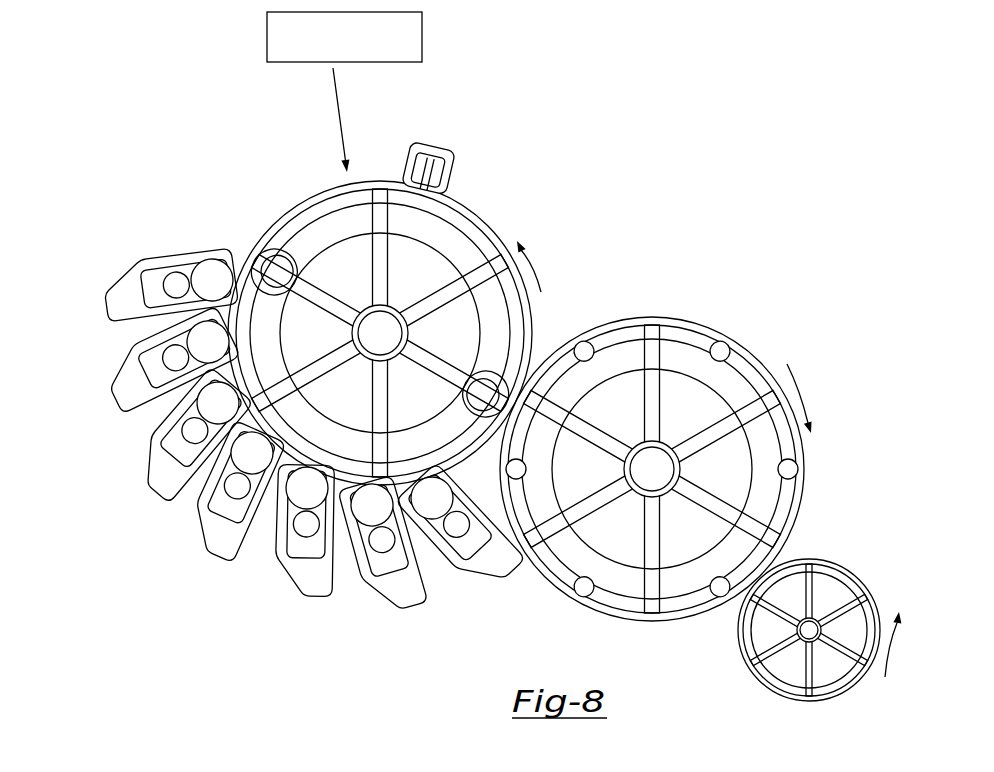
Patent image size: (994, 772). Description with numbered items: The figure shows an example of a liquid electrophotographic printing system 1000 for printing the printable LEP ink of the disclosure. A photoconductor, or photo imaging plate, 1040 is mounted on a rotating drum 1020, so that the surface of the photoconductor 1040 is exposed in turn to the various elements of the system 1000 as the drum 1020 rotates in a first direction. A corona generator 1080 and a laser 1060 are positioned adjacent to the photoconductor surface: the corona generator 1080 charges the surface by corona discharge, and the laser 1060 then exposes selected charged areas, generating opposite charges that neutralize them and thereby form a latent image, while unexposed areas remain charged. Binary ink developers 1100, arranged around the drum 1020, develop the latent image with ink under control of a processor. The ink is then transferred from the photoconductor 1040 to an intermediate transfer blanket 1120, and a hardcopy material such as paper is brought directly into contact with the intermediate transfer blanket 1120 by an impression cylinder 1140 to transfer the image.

The LEP printing system 1000 is at (679, 228).
The rotating drum 1020 is at (325, 256).
The photoconductor/photo imaging plate (PIP) 1040 is at (312, 194).
The laser 1060 is at (267, 38).
The corona generator 1080 is at (462, 163).
The binary ink developers (BIDs) 1100 is at (152, 490).
The intermediate transfer blanket 1120 is at (808, 463).
The impression cylinder 1140 is at (810, 702).